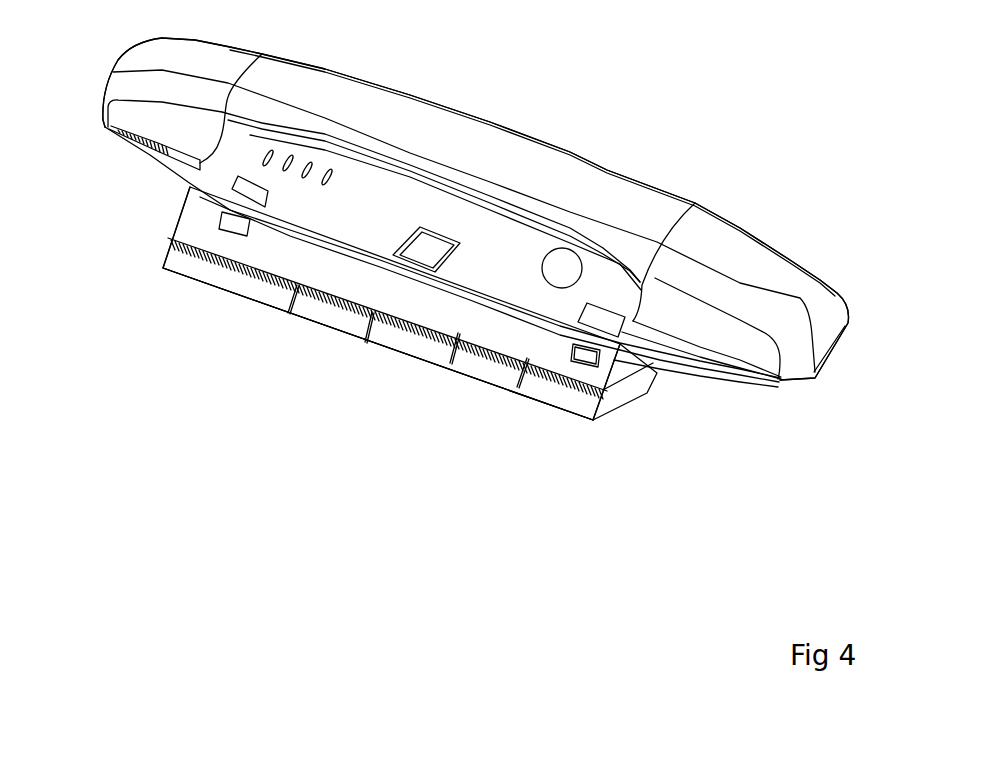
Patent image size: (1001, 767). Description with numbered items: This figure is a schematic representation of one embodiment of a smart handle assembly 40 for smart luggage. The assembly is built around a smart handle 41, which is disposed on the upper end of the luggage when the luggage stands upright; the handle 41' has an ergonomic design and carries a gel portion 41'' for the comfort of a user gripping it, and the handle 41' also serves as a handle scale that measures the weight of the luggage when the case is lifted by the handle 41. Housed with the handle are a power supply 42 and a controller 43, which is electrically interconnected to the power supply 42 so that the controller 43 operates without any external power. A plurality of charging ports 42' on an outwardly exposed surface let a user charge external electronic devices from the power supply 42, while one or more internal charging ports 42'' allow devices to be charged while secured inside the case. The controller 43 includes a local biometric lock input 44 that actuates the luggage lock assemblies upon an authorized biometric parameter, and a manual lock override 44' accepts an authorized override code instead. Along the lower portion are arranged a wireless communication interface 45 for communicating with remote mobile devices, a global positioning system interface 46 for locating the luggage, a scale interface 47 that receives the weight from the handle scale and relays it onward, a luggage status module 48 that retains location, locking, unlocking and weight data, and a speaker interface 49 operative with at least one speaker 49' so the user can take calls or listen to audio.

The smart handle assembly 40 is at (648, 78).
The smart handle 41 is at (491, 212).
The handle 41' is at (474, 211).
The gel portion 41'' is at (257, 91).
The power supply 42 is at (333, 292).
The charging port 42' is at (297, 207).
The internal charging port 42'' is at (671, 390).
The controller 43 is at (610, 407).
The local biometric lock input 44 is at (463, 245).
The manual lock override 44' is at (341, 184).
The wireless communication interface 45 is at (243, 284).
The global positioning system interface 46 is at (336, 317).
The scale interface 47 is at (419, 341).
The luggage status module 48 is at (493, 367).
The speaker interface 49 is at (566, 378).
The speaker 49' is at (533, 277).